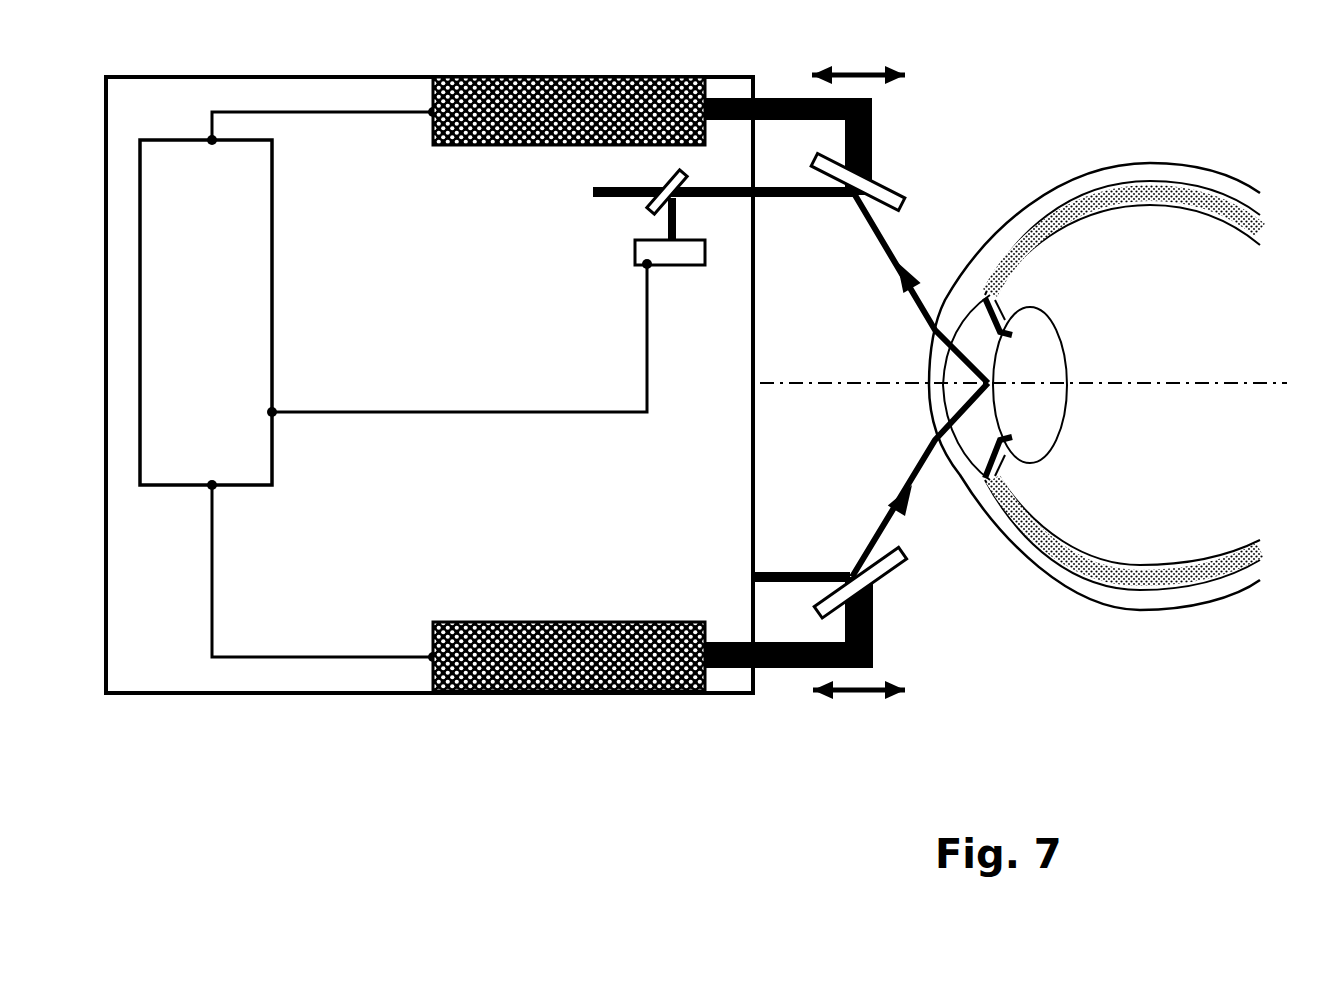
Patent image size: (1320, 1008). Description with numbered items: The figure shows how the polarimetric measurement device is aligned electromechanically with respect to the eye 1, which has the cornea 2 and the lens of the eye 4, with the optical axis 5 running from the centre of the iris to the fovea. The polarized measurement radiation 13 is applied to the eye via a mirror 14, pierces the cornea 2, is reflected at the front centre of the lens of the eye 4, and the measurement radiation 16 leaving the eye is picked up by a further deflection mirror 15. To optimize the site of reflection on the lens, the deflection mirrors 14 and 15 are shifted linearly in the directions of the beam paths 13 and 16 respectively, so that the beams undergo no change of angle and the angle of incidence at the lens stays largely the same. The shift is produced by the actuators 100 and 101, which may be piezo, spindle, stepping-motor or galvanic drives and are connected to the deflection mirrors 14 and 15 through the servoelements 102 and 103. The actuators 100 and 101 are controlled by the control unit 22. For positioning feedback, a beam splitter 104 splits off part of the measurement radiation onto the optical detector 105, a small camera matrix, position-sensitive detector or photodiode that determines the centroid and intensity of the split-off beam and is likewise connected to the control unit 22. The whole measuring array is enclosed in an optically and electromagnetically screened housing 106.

The eye 1 is at (1110, 612).
The cornea 2 is at (975, 472).
The lens of the eye 4 is at (1048, 358).
The optical axis 5 is at (1280, 385).
The polarized measurement radiation 13 is at (810, 570).
The mirror 14 is at (877, 545).
The further deflection mirror 15 is at (890, 210).
The measurement radiation leaving the eye 16 is at (825, 195).
The control unit 22 is at (273, 300).
The actuator 100 is at (470, 148).
The actuator 101 is at (560, 620).
The servoelement 102 is at (872, 132).
The servoelement 103 is at (873, 632).
The beam splitter 104 is at (645, 200).
The optical detector 105 is at (680, 270).
The housing 106 is at (318, 694).